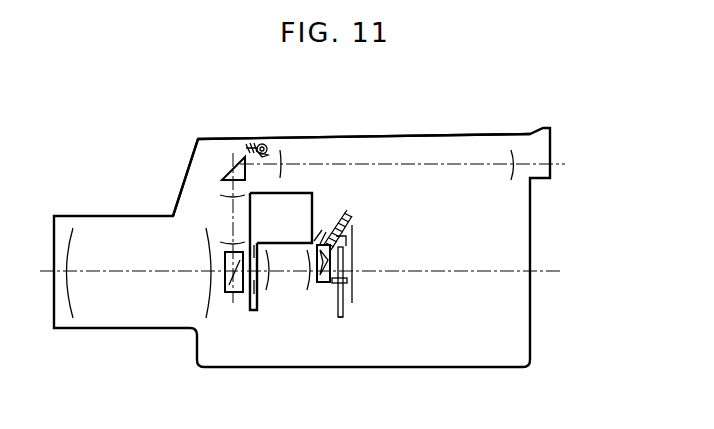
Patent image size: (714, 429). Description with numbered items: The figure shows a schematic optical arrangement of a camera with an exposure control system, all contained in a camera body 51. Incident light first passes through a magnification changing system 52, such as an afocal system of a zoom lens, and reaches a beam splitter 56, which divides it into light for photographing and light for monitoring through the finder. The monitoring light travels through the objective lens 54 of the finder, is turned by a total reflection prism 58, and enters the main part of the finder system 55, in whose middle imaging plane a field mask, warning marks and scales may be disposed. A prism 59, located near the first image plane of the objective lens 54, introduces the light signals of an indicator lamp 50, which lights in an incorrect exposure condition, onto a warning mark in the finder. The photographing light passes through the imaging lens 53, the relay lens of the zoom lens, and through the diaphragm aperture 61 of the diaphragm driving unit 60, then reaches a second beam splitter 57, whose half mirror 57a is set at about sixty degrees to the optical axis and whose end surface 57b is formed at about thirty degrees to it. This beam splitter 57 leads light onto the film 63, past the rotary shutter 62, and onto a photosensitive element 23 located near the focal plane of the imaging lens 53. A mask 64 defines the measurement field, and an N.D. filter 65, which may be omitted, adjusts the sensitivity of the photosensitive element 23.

The photosensitive element 23 is at (350, 228).
The indicator lamp 50 is at (261, 143).
The camera body 51 is at (467, 348).
The magnification changing system 52 is at (108, 316).
The imaging lens 53 is at (285, 286).
The objective lens 54 is at (222, 222).
The finder system 55 is at (433, 139).
The beam splitter 56 is at (235, 292).
The beam splitter 57 is at (324, 284).
The half mirror 57a is at (308, 254).
The end surface 57b is at (348, 282).
The total reflection prism 58 is at (230, 170).
The prism 59 is at (282, 155).
The diaphragm driving unit 60 is at (294, 201).
The diaphragm aperture 61 is at (250, 300).
The rotary shutter 62 is at (339, 318).
The film 63 is at (353, 291).
The mask 64 is at (344, 258).
The N.D. filter 65 is at (344, 243).